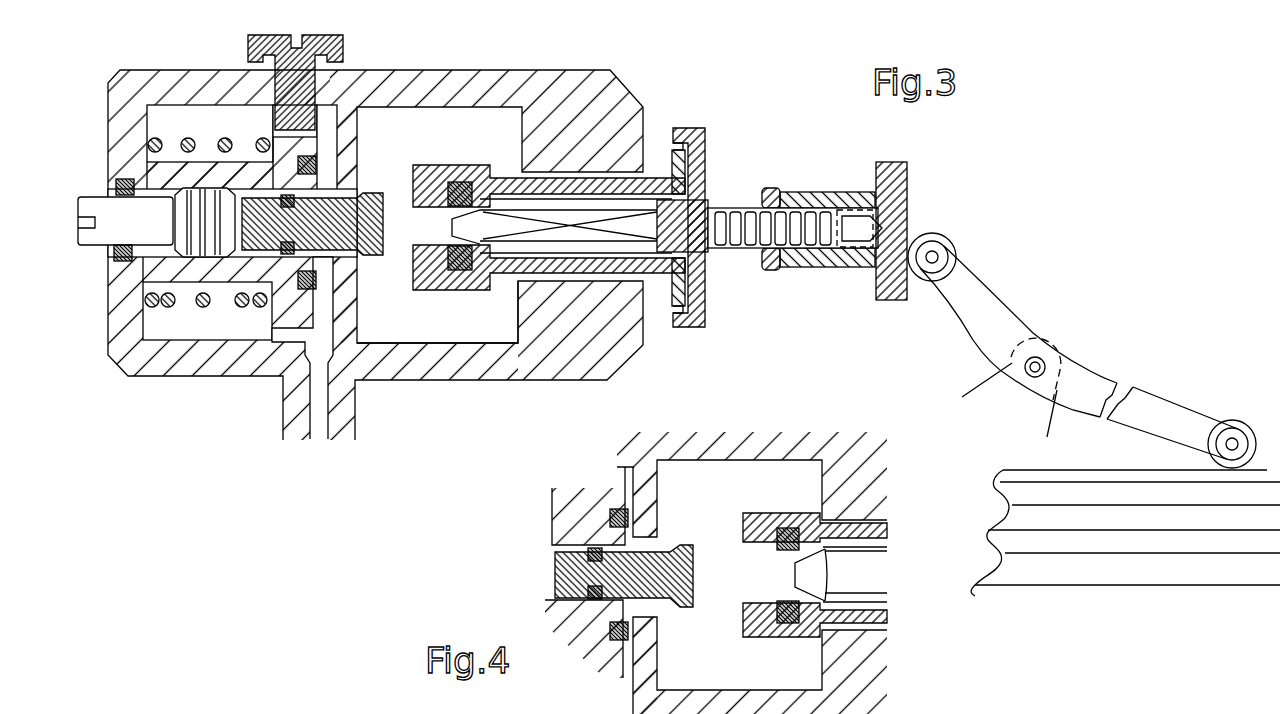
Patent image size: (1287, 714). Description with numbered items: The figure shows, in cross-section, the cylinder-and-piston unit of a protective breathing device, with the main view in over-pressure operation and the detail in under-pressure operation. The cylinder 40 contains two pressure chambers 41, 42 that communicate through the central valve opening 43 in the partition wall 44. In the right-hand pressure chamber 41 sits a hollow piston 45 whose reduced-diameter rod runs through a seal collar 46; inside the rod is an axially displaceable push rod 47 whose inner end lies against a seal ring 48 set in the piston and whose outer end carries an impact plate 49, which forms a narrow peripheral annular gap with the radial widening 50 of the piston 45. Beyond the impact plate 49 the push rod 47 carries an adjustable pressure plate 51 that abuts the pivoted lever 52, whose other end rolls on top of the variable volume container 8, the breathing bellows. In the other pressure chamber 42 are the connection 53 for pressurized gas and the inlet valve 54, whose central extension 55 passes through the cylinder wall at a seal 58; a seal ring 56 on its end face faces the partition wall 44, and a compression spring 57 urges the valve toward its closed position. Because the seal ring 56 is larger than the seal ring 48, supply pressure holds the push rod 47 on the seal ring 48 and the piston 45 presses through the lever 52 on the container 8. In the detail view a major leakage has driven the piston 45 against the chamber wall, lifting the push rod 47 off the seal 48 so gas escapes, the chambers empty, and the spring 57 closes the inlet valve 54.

In FIG. 3, the variable volume container 8 is at (1030, 472).
In FIG. 3, the cylinder 40 is at (626, 101).
In FIG. 4, the cylinder 40 is at (726, 450).
In FIG. 3, the pressure chamber 41 is at (380, 312).
In FIG. 3, the pressure chamber 42 is at (215, 335).
In FIG. 3, the central valve opening 43 is at (367, 190).
In FIG. 4, the central valve opening 43 is at (650, 605).
In FIG. 3, the partition wall 44 is at (347, 130).
In FIG. 4, the partition wall 44 is at (633, 467).
In FIG. 3, the piston 45 is at (578, 178).
In FIG. 4, the piston 45 is at (750, 522).
In FIG. 3, the seal collar 46 is at (672, 142).
In FIG. 3, the push rod 47 is at (500, 210).
In FIG. 4, the push rod 47 is at (875, 560).
In FIG. 3, the seal ring 48 is at (462, 182).
In FIG. 4, the seal ring 48 is at (788, 528).
In FIG. 3, the impact plate 49 is at (700, 167).
In FIG. 3, the radial widening 50 is at (700, 128).
In FIG. 3, the adjustable pressure plate 51 is at (898, 165).
In FIG. 3, the pivoted lever 52 is at (1015, 305).
In FIG. 3, the connection 53 is at (318, 428).
In FIG. 3, the inlet valve 54 is at (245, 165).
In FIG. 4, the inlet valve 54 is at (575, 528).
In FIG. 3, the extension 55 is at (203, 188).
In FIG. 3, the seal ring 56 is at (300, 290).
In FIG. 4, the seal ring 56 is at (627, 640).
In FIG. 3, the compression spring 57 is at (200, 306).
In FIG. 3, the seal 58 is at (118, 185).